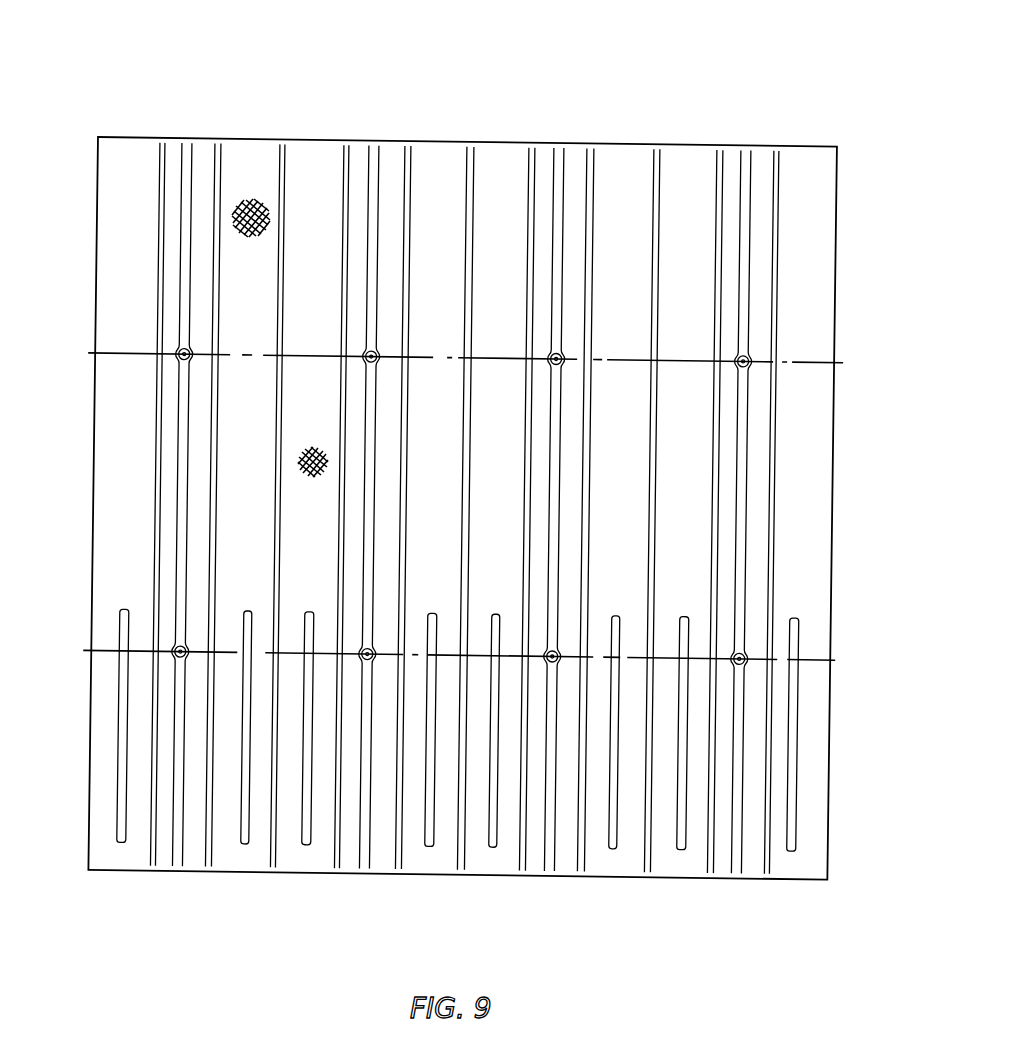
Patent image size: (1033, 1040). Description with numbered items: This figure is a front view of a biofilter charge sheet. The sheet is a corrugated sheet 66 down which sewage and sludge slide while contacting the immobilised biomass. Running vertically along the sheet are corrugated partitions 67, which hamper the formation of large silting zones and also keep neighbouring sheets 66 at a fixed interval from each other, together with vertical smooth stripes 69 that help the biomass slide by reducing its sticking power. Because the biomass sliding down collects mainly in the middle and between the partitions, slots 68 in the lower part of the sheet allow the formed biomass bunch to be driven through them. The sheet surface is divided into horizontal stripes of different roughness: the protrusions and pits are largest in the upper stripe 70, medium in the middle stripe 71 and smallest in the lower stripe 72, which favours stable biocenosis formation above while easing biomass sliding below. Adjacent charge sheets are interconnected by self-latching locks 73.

The corrugated sheet 66 is at (692, 145).
The corrugated partition 67 is at (375, 158).
The slot 68 is at (248, 706).
The smooth stripe 69 is at (530, 167).
The horizontal stripe of maximum roughness 70 is at (820, 255).
The horizontal stripe of medium roughness 71 is at (812, 603).
The horizontal stripe of minimum roughness 72 is at (805, 800).
The lock 73 is at (745, 651).